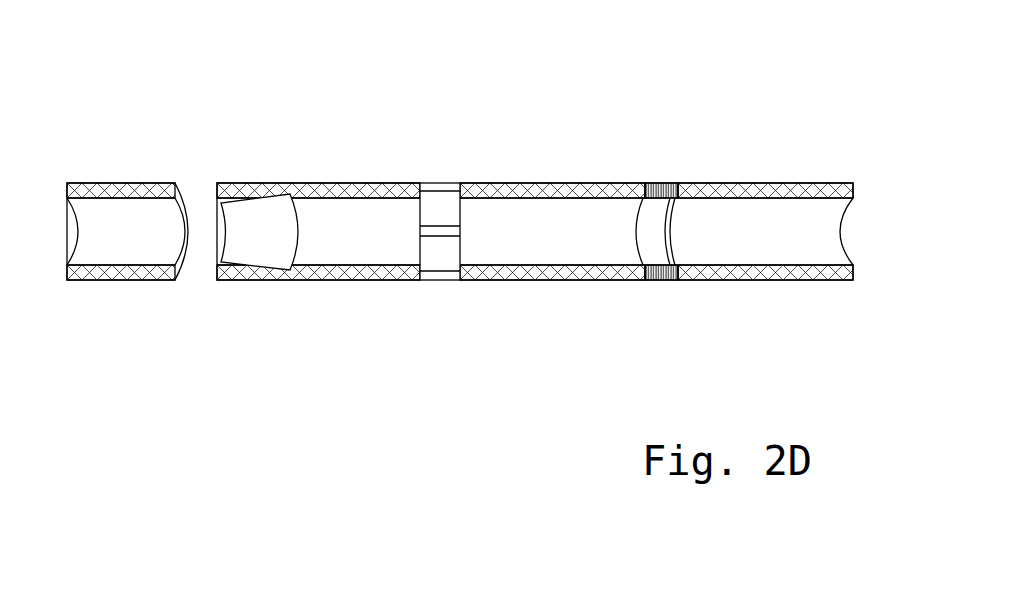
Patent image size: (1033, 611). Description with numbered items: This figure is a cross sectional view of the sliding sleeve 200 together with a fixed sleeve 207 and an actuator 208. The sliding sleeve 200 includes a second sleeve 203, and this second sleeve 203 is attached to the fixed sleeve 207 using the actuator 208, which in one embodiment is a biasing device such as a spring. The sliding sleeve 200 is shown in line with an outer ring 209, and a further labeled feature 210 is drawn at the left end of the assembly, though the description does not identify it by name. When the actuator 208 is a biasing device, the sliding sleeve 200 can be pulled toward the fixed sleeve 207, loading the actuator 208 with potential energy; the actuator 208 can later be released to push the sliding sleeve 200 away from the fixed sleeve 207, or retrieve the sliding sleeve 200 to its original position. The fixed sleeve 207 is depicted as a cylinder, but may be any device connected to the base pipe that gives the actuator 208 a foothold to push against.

The sliding sleeve 200 is at (362, 280).
The second sleeve 203 is at (470, 185).
The fixed sleeve 207 is at (727, 185).
The actuator 208 is at (645, 187).
The outer ring 209 is at (123, 273).
The tube lumen 210 is at (118, 228).